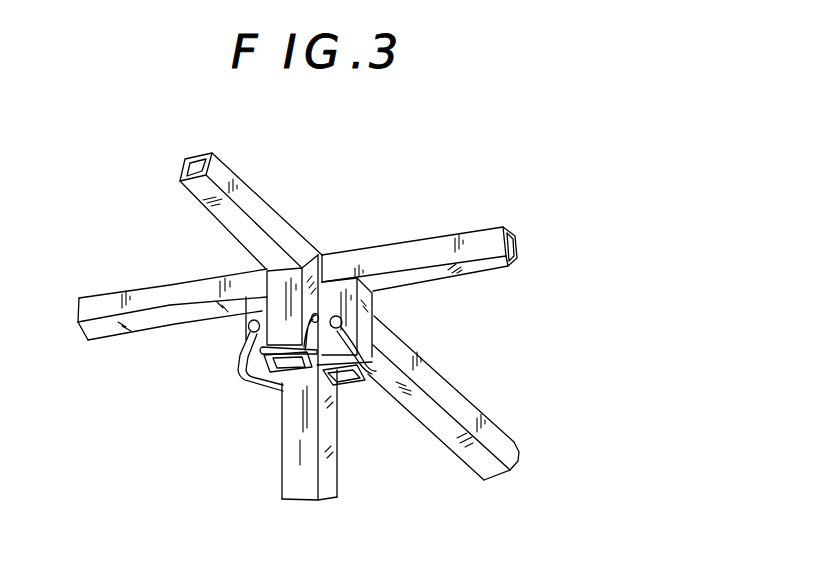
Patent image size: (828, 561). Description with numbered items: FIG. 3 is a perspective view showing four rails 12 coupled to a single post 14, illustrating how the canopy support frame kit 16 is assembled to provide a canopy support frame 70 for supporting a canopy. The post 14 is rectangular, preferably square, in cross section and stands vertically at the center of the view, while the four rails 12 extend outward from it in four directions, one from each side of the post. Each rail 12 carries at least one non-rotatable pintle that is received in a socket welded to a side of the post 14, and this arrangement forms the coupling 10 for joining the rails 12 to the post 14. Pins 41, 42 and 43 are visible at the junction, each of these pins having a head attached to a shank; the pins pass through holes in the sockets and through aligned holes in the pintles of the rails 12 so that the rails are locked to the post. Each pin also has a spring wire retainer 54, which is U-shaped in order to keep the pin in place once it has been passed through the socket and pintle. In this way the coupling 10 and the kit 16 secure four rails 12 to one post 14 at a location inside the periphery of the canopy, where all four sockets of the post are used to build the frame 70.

The canopy support frame 70 is at (421, 176).
The rails 12 is at (266, 212).
The post 14 is at (338, 482).
The canopy support frame kit 16 is at (340, 242).
The coupling 10 is at (242, 386).
The pin 41 is at (342, 322).
The pin 42 is at (344, 378).
The pin 43 is at (248, 332).
The spring wire retainer 54 is at (283, 392).